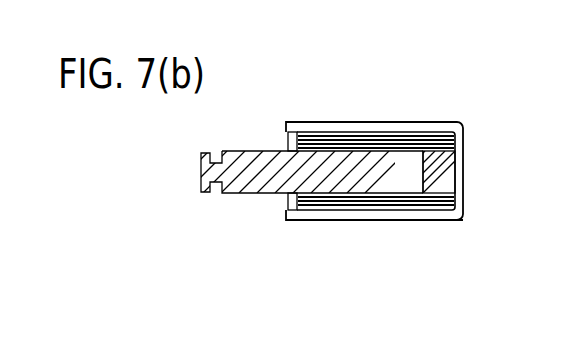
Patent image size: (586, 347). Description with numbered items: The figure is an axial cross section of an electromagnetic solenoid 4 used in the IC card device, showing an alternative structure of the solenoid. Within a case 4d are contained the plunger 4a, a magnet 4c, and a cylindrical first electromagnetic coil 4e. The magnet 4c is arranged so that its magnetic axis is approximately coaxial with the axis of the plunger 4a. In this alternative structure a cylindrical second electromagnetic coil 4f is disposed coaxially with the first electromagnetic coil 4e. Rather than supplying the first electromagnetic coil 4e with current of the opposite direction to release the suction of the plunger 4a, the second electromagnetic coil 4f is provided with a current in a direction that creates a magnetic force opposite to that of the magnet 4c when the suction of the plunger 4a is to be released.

The electromagnetic solenoid 4 is at (363, 112).
The plunger 4a is at (252, 191).
The magnet 4c is at (458, 164).
The case 4d is at (465, 130).
The first electromagnetic coil 4e is at (412, 209).
The second electromagnetic coil 4f is at (355, 212).